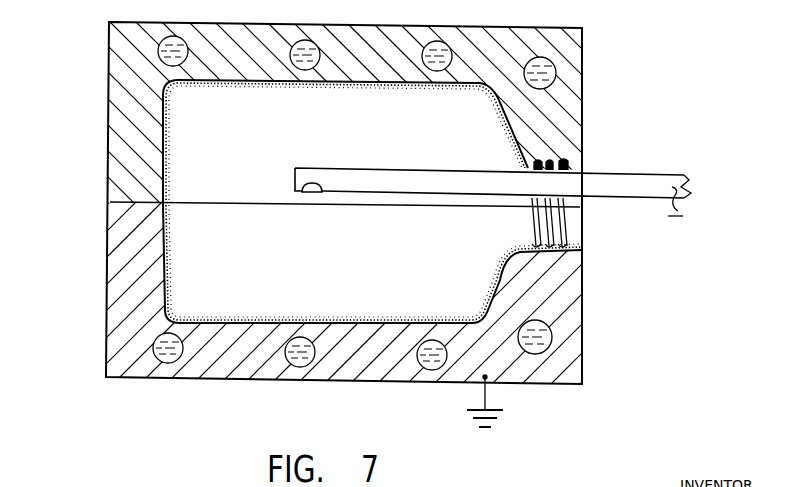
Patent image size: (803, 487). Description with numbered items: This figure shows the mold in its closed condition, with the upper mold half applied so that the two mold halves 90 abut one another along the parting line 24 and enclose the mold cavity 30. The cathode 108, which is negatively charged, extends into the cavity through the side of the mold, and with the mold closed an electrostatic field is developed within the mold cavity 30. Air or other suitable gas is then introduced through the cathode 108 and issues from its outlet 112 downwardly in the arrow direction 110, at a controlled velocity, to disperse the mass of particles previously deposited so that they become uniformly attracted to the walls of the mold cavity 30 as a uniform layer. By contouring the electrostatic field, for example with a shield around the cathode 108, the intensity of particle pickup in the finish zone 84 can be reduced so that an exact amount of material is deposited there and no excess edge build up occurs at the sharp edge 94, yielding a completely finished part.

The mold halves 90 is at (103, 104).
The mold cavity 30 is at (212, 249).
The parting line 24 is at (209, 201).
The cathode 108 is at (397, 171).
The outlet 112 is at (302, 195).
The arrow direction 110 is at (312, 212).
The finish zone 84 is at (584, 166).
The sharp edge 94 is at (584, 247).